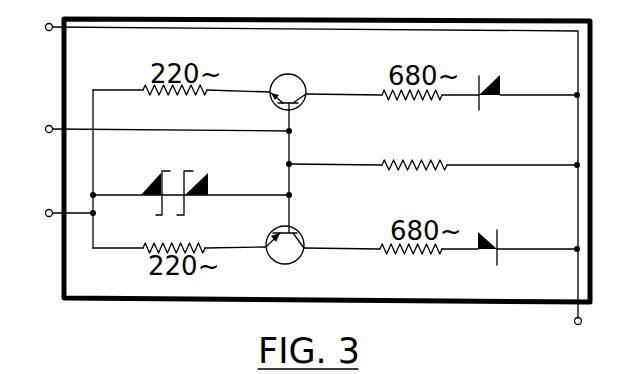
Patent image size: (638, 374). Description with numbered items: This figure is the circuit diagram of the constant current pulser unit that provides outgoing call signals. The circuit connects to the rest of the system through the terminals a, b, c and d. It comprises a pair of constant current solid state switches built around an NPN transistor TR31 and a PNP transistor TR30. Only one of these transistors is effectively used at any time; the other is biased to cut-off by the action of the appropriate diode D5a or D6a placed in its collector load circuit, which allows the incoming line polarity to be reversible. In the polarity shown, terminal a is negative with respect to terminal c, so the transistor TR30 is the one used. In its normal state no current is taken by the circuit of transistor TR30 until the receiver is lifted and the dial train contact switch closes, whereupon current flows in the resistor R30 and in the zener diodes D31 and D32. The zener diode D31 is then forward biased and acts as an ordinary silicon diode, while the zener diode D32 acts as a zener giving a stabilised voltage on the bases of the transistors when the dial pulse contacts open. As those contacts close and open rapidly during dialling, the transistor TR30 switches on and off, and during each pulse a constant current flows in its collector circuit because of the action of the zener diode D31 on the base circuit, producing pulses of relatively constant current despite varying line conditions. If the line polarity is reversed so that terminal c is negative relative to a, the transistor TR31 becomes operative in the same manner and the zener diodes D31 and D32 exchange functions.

The terminal a is at (37, 21).
The terminal b is at (37, 123).
The terminal c is at (37, 217).
The terminal d is at (590, 323).
The NPN transistor TR31 is at (302, 102).
The PNP transistor TR30 is at (294, 226).
The diode D5a is at (492, 100).
The diode D6a is at (478, 253).
The zener diode D31 is at (188, 198).
The zener diode D32 is at (135, 190).
The resistor R30 is at (443, 158).